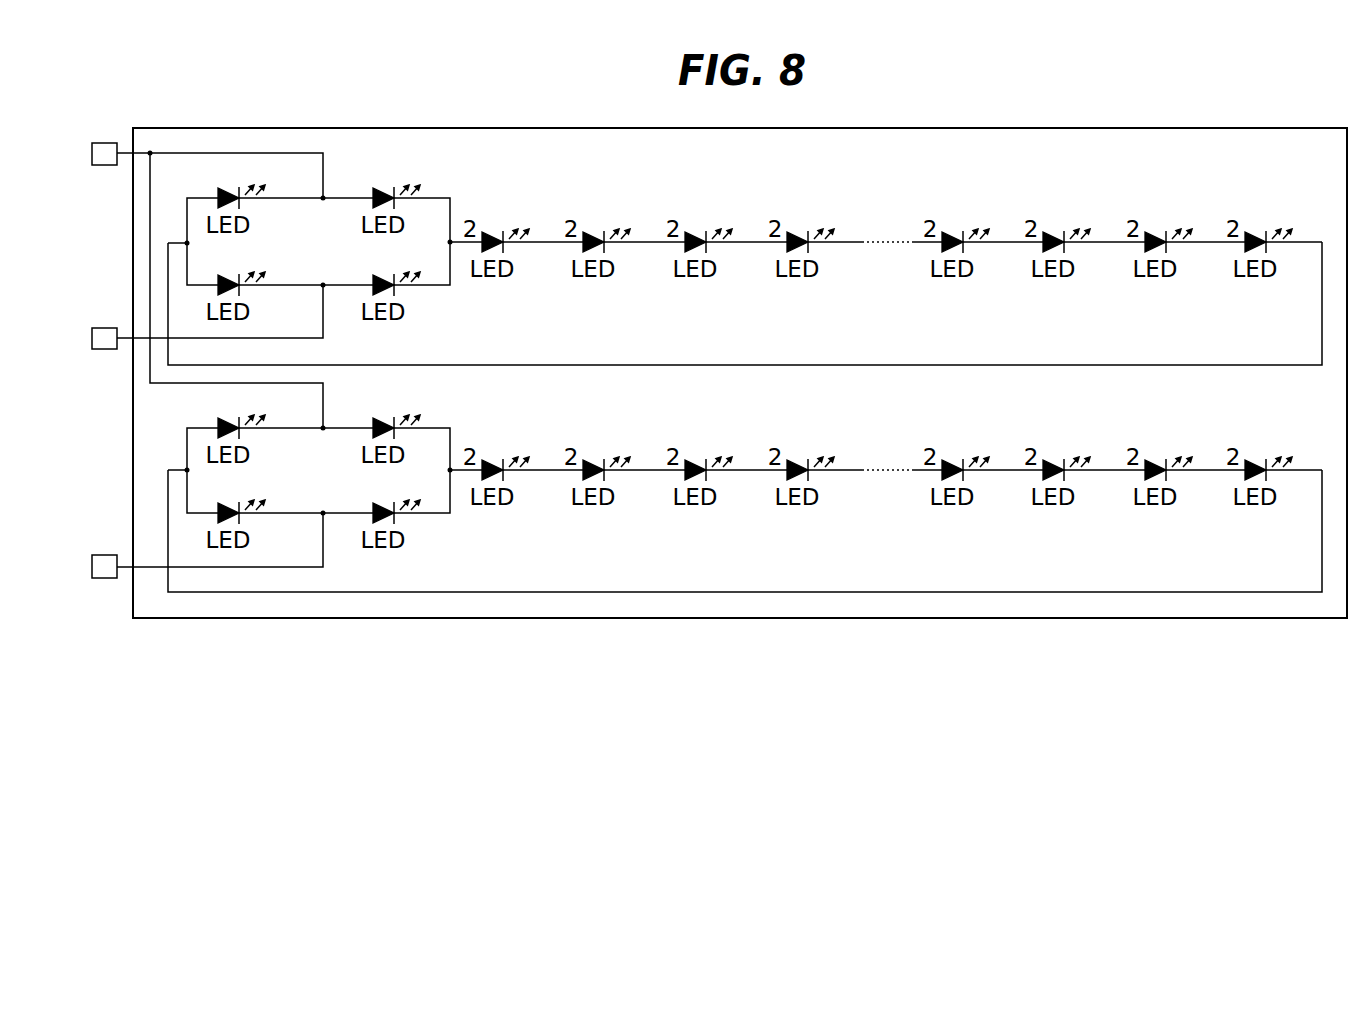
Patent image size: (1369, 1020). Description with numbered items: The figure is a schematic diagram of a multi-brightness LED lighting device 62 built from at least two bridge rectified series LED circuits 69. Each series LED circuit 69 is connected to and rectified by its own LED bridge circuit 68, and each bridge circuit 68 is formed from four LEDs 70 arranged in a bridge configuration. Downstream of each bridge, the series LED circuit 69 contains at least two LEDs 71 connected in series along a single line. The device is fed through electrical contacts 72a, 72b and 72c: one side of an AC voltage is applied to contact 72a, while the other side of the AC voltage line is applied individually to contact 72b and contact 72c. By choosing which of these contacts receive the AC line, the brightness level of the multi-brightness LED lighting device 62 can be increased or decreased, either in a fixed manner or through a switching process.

The multi-brightness LED lighting device 62 is at (215, 634).
The LED bridge circuit 68 is at (286, 336).
The series LED circuit 69 is at (886, 368).
The LED 70 is at (213, 190).
The LED 71 is at (490, 225).
The electrical contact 72a is at (102, 143).
The electrical contact 72b is at (102, 328).
The electrical contact 72c is at (92, 567).